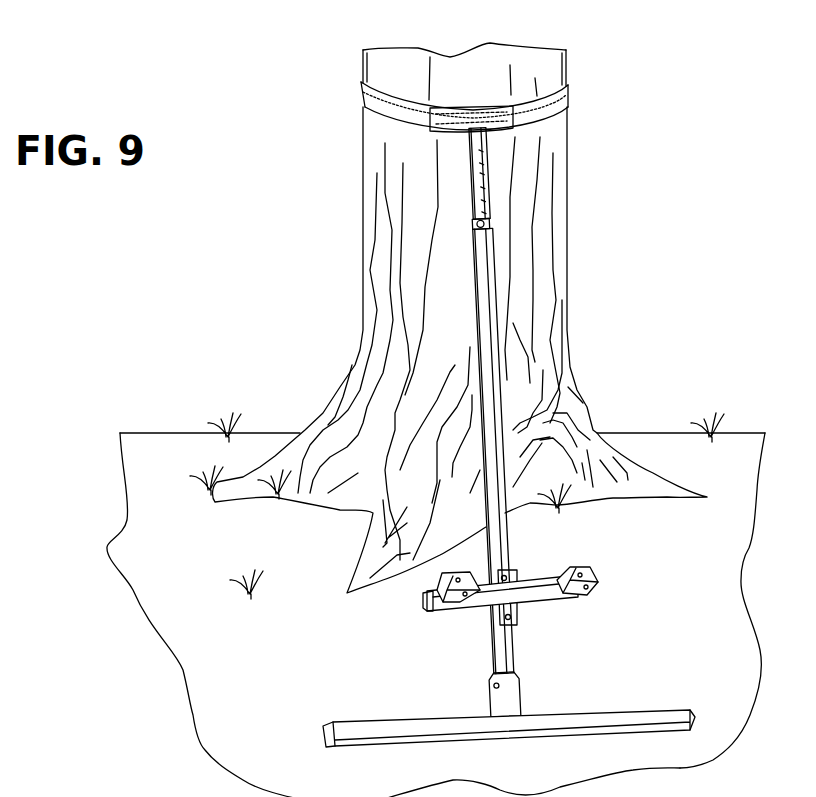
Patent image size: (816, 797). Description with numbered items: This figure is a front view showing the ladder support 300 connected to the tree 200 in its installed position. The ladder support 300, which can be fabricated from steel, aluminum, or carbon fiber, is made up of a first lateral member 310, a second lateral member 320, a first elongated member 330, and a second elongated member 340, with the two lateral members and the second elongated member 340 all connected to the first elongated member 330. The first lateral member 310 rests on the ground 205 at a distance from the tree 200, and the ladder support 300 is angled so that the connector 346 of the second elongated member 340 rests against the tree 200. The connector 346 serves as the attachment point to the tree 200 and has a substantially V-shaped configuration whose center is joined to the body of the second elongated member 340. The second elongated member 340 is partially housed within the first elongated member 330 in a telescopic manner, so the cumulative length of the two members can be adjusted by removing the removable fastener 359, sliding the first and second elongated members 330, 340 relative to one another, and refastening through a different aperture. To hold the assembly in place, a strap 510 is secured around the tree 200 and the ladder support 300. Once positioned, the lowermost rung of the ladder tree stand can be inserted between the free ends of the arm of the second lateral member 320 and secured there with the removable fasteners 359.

The tree 200 is at (449, 89).
The ground 205 is at (295, 669).
The ladder support 300 is at (488, 215).
The first lateral member 310 is at (583, 723).
The second lateral member 320 is at (540, 590).
The first elongated member 330 is at (487, 323).
The second elongated member 340 is at (482, 178).
The connector 346 is at (500, 122).
The removable fastener 359 is at (471, 227).
The strap 510 is at (383, 113).